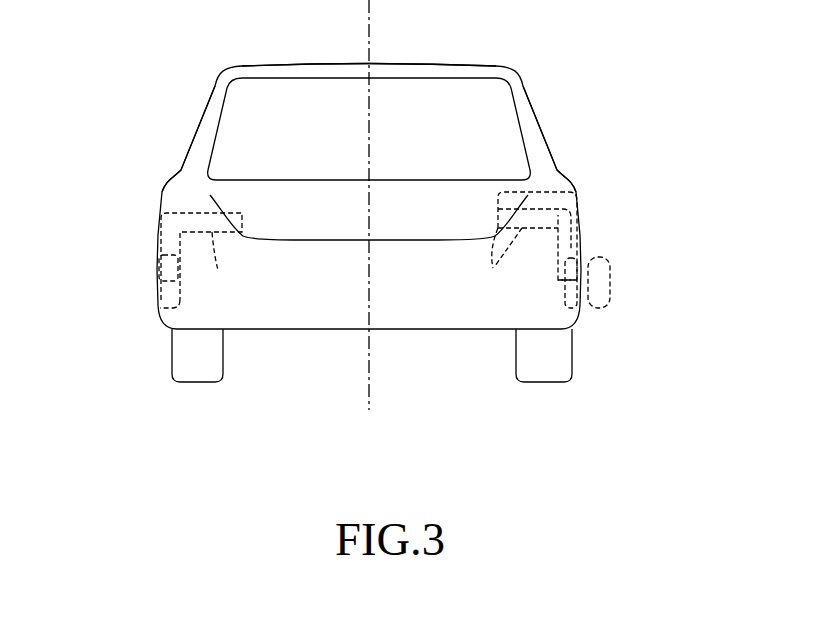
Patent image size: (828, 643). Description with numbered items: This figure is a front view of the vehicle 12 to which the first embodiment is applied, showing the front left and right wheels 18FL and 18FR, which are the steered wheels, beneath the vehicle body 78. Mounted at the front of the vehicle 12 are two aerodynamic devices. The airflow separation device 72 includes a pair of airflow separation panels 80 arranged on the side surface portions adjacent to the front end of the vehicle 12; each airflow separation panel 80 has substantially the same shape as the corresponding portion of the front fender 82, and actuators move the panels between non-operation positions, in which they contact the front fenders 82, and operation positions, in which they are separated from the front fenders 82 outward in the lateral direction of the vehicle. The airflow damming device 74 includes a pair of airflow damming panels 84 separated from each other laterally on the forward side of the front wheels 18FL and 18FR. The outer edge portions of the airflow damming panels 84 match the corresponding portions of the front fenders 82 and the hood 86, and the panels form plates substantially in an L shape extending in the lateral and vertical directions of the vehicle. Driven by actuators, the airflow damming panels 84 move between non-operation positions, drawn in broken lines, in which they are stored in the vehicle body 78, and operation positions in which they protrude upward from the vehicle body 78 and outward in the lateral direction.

The vehicle 12 is at (280, 56).
The front right wheel 18FR is at (195, 383).
The front left wheel 18FL is at (545, 383).
The airflow separation device 72 is at (152, 288).
The airflow damming device 74 is at (157, 195).
The vehicle body 78 is at (493, 66).
The airflow separation panel 80 is at (155, 307).
The front fender 82 is at (160, 242).
The airflow damming panel 84 is at (363, 266).
The hood 86 is at (405, 197).